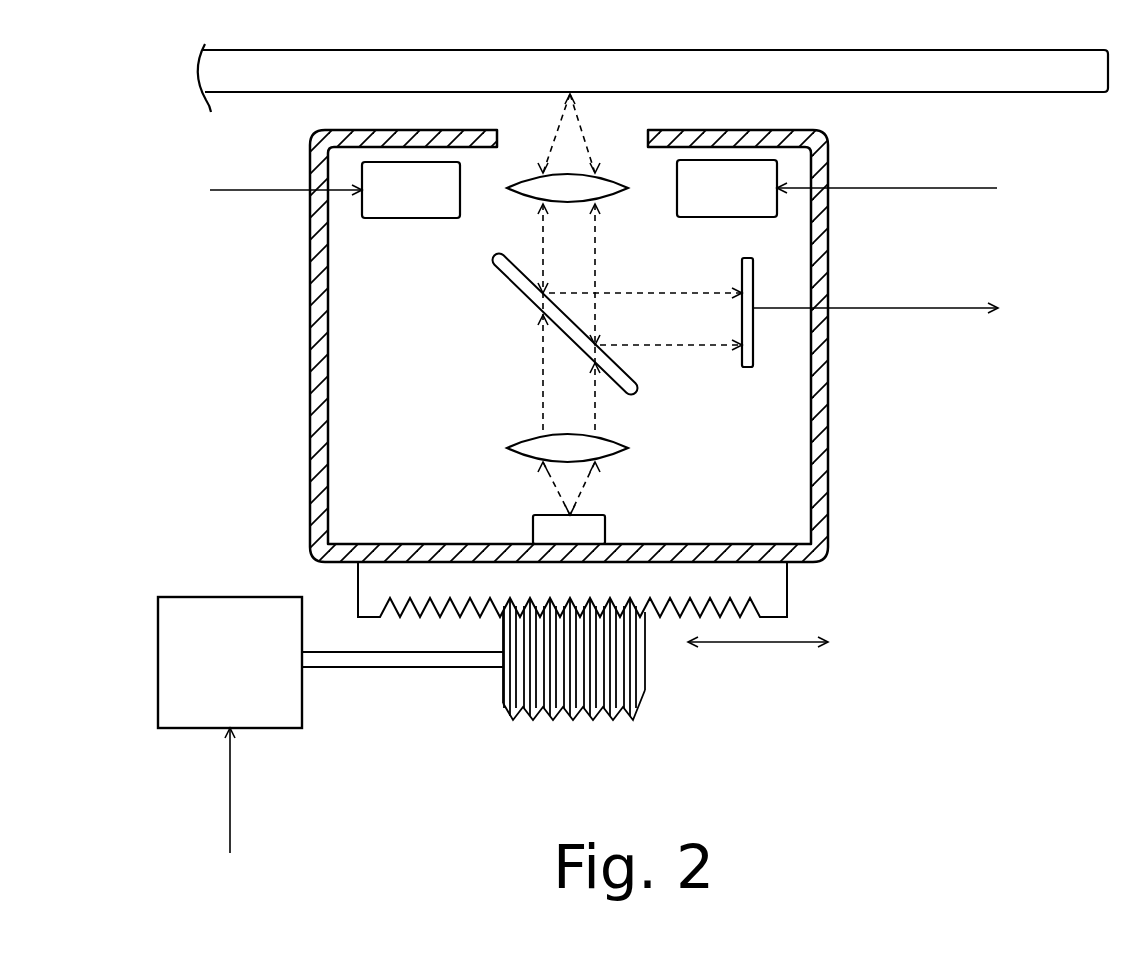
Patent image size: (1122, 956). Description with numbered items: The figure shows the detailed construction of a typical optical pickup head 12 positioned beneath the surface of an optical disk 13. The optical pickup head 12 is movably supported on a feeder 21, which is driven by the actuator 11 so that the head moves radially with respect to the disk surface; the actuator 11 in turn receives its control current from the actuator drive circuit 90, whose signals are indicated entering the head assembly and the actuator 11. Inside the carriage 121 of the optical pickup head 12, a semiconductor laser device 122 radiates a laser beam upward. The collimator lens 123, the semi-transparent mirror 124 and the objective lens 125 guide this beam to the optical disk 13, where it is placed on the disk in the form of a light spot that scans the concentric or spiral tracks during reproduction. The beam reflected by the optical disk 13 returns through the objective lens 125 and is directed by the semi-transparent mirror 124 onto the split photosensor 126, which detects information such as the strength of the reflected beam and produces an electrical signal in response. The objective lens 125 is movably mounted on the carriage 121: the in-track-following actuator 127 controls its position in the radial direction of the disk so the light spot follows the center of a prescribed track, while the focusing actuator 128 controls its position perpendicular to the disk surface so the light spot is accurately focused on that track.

The actuator 11 is at (187, 597).
The optical pickup head 12 is at (610, 312).
The optical disk 13 is at (870, 50).
The feeder 21 is at (645, 688).
The actuator drive circuit 90 is at (595, 537).
The carriage 121 is at (310, 412).
The semiconductor laser device 122 is at (537, 528).
The collimator lens 123 is at (517, 445).
The semi-transparent mirror 124 is at (518, 288).
The objective lens 125 is at (540, 177).
The split photosensor 126 is at (750, 348).
The in-track-following actuator 127 is at (420, 218).
The focusing actuator 128 is at (717, 217).